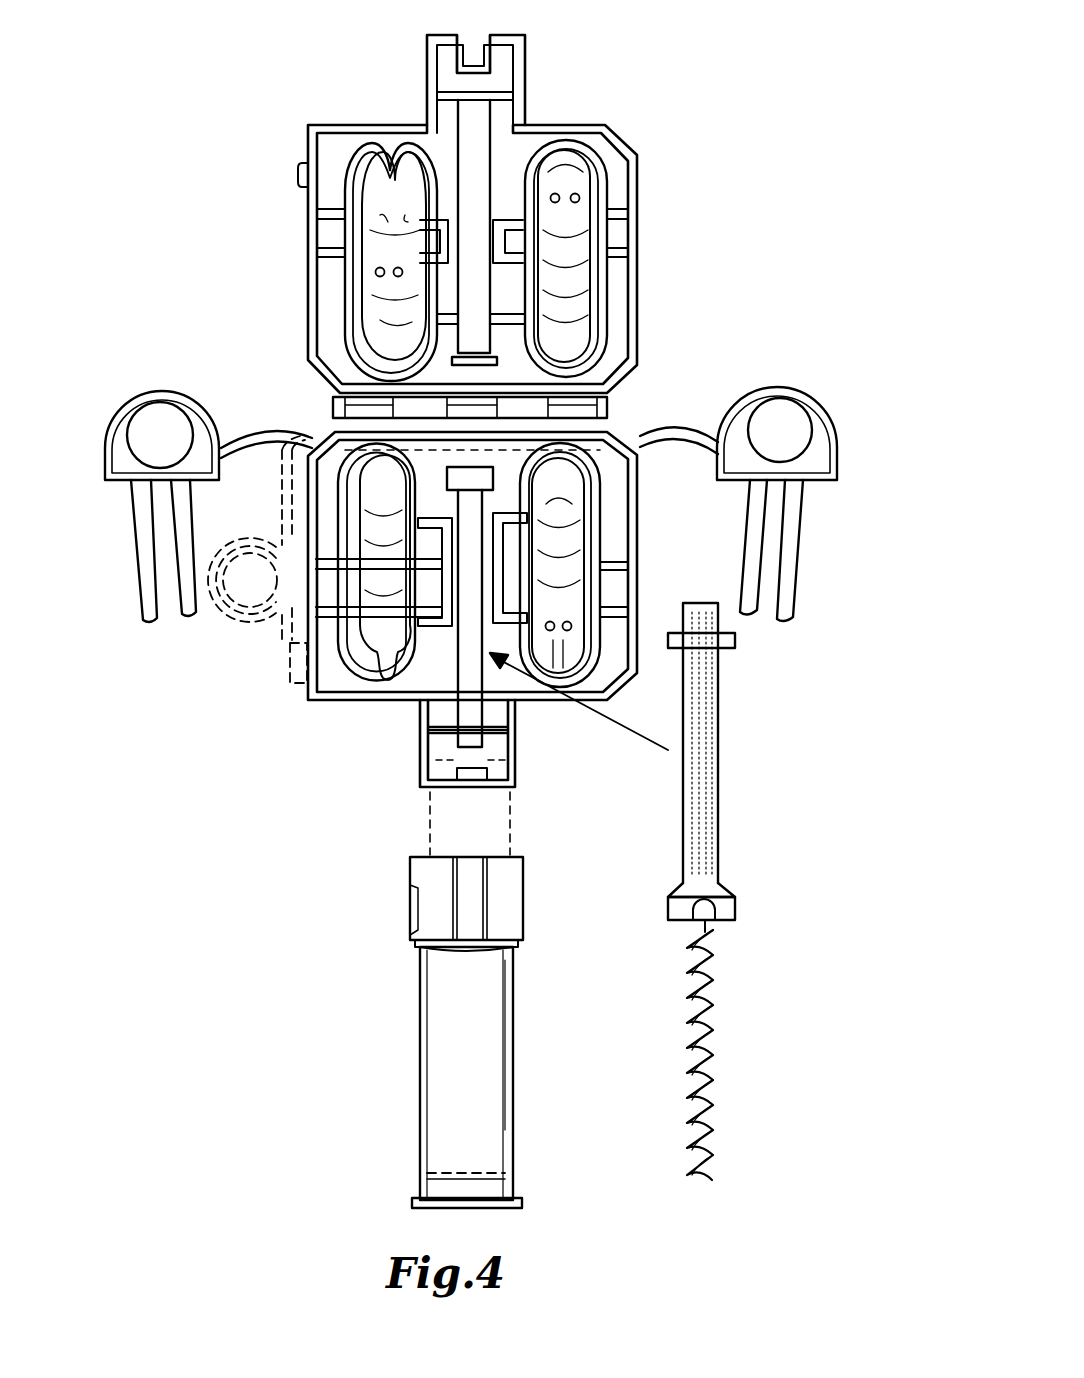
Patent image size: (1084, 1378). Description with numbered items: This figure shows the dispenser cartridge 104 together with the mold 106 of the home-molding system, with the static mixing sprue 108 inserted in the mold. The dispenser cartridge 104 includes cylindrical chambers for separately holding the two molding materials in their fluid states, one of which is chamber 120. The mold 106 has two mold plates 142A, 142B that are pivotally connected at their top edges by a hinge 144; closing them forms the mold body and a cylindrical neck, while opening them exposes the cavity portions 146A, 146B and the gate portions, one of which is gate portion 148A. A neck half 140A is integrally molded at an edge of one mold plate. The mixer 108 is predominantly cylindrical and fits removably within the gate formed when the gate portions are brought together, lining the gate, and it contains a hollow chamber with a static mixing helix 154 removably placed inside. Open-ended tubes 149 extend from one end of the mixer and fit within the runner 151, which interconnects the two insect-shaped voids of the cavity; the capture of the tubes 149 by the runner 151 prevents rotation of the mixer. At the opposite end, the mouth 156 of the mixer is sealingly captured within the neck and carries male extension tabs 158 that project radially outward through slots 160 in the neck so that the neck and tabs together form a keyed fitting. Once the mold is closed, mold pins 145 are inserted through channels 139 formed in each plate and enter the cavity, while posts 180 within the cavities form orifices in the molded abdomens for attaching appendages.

The dispenser cartridge 104 is at (435, 1032).
The mold 106 is at (660, 239).
The static mixing sprue 108 is at (609, 891).
The chamber 120 is at (483, 1007).
The channels 139 is at (637, 217).
The neck half 140A is at (520, 86).
The mold plate 142A is at (643, 163).
The mold plate 142B is at (637, 530).
The hinge 144 is at (630, 403).
The mold pins 145 is at (178, 390).
The cavity portion 146A is at (587, 308).
The cavity portion 146B is at (583, 522).
The gate portion 148A is at (480, 163).
The open-ended tubes 149 is at (725, 648).
The runner 151 is at (520, 318).
The static mixing helix 154 is at (742, 1055).
The mouth 156 is at (733, 907).
The male extension tabs 158 is at (717, 897).
The slots 160 is at (470, 48).
The posts 180 is at (580, 198).